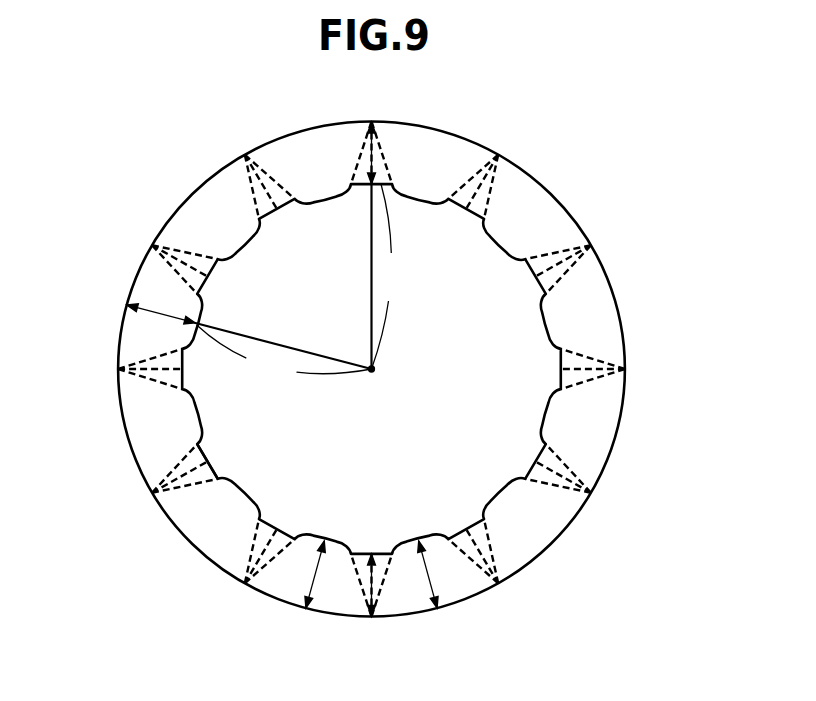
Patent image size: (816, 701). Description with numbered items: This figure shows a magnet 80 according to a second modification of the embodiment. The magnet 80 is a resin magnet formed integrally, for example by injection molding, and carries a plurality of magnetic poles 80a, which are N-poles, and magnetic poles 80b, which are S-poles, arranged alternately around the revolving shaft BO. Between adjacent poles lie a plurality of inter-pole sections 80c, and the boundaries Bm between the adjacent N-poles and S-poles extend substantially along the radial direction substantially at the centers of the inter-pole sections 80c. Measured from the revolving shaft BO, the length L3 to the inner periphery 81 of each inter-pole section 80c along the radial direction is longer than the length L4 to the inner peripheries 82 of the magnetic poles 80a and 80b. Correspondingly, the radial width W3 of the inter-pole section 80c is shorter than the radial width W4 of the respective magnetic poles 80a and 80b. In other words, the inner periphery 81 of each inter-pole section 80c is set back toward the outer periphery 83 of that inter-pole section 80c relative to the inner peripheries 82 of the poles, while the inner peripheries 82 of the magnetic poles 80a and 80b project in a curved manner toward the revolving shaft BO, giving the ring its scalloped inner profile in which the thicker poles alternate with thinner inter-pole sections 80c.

The magnet 80 is at (599, 252).
The magnetic pole (N-pole) 80a is at (142, 433).
The magnetic pole (S-pole) 80b is at (614, 412).
The inter-pole section 80c is at (246, 153).
The inner periphery of the inter-pole section 81 is at (205, 461).
The inner periphery of the magnetic pole 82 is at (484, 254).
The outer periphery of the inter-pole section 83 is at (243, 584).
The boundary of magnetic poles Bm is at (500, 158).
The radial width of the inter-pole section W3 is at (381, 150).
The radial width of the magnetic pole W4 is at (128, 310).
The length from the revolving shaft to the inner periphery of the inter-pole section L3 is at (388, 276).
The length from the revolving shaft to the inner peripheries of the magnetic poles L4 is at (282, 352).
The revolving shaft BO is at (396, 374).